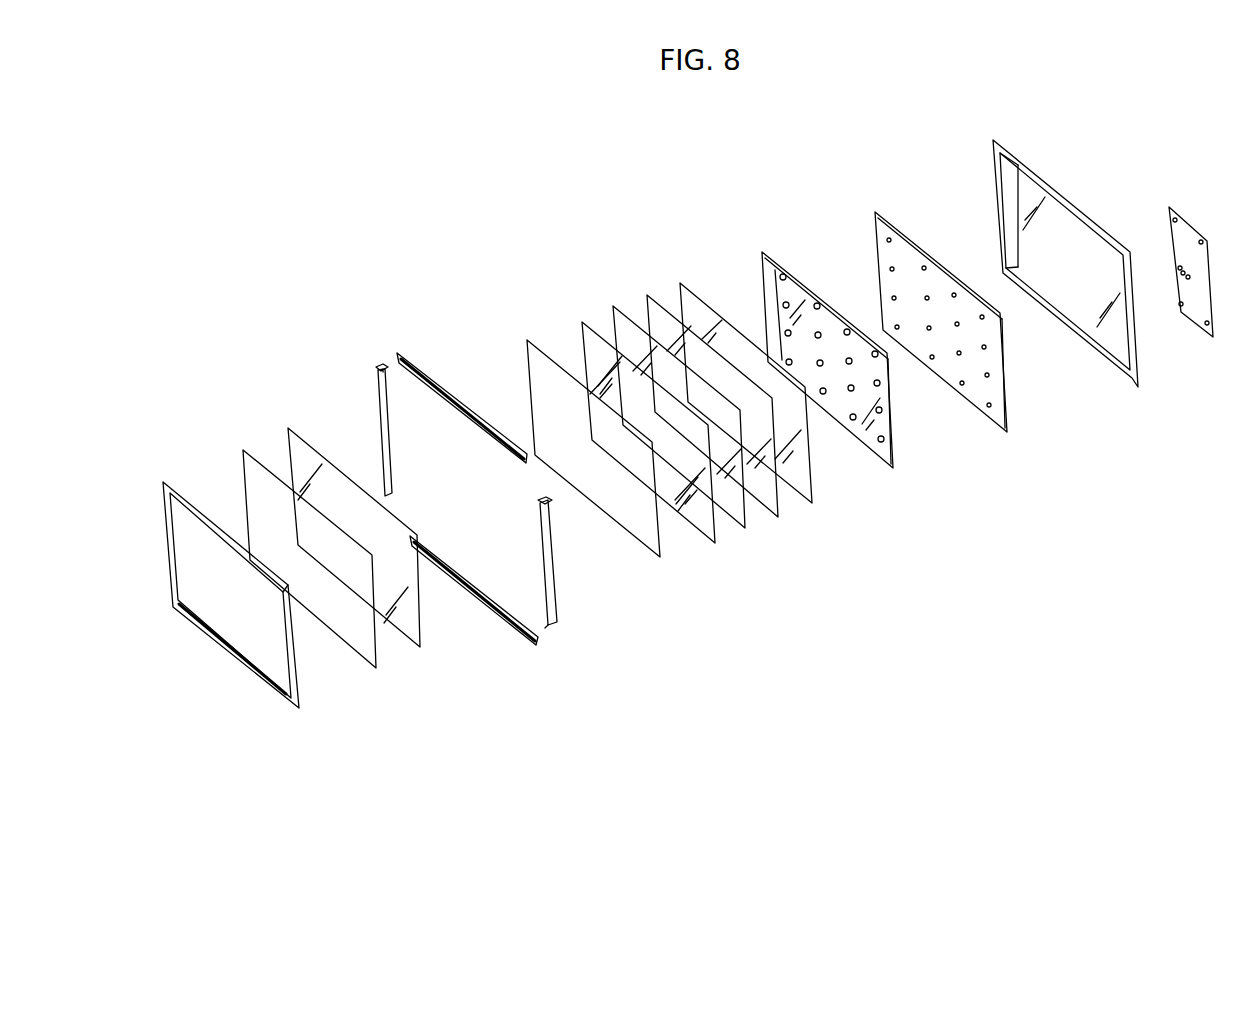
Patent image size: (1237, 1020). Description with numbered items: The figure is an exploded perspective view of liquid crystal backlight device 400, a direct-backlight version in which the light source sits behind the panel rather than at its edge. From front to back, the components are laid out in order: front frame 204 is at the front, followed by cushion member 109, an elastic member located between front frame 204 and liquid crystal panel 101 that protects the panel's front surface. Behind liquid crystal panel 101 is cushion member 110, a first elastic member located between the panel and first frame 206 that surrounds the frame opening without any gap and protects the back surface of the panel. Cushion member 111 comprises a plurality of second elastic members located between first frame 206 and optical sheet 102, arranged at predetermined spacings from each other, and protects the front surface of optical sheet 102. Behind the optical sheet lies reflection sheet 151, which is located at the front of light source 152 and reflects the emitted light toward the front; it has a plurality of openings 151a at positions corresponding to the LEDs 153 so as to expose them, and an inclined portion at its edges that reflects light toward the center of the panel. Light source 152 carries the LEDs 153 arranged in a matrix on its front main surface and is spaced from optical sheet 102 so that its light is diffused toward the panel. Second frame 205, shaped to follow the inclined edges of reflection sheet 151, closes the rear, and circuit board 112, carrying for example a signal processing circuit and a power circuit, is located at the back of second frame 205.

The liquid crystal backlight device 400 is at (452, 266).
The front frame 204 is at (295, 707).
The cushion member 109 is at (375, 672).
The liquid crystal panel 101 is at (405, 641).
The cushion member 110 is at (476, 616).
The first frame 206 is at (557, 623).
The cushion member 111 is at (648, 553).
The optical sheet 102 is at (821, 496).
The reflection sheet 151 is at (876, 466).
The openings 151a is at (808, 297).
The light source 152 is at (997, 421).
The LEDs 153 is at (925, 272).
The second frame 205 is at (1128, 383).
The circuit board 112 is at (1200, 326).